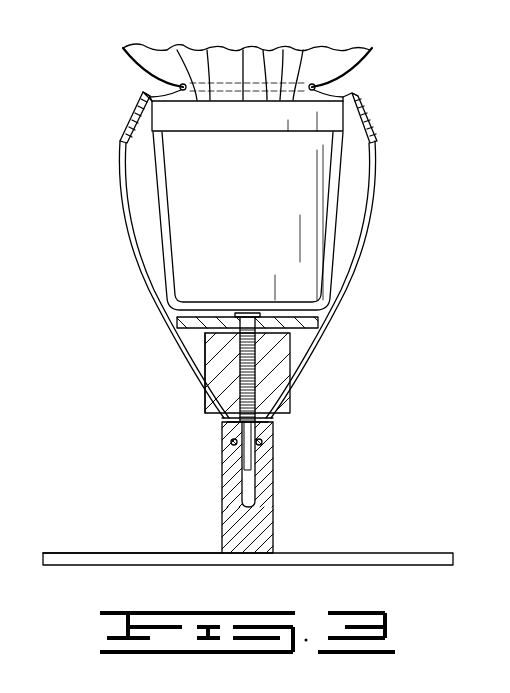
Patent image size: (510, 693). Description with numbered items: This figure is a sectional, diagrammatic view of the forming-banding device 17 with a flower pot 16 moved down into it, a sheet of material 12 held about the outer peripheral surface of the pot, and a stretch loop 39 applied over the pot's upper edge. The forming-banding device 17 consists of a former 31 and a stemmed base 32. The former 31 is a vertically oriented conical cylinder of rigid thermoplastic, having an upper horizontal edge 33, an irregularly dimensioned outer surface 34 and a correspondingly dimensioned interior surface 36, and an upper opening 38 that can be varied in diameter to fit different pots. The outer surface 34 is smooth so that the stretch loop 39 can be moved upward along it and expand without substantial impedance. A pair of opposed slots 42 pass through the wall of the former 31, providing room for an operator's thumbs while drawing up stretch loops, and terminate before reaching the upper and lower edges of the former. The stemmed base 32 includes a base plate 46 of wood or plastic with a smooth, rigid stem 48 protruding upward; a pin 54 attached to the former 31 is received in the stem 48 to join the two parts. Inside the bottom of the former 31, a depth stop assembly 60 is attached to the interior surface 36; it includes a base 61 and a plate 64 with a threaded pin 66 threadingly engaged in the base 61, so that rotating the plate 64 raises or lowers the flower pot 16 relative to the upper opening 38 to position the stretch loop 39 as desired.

The sheet of material 12 is at (273, 48).
The flower pot 16 is at (330, 203).
The forming-banding device 17 is at (370, 112).
The former 31 is at (132, 112).
The stemmed base 32 is at (382, 553).
The upper horizontal edge 33 is at (352, 93).
The outer surface 34 is at (372, 128).
The interior surface 36 is at (137, 140).
The upper opening 38 is at (147, 92).
The stretch loop 39 is at (133, 58).
The slots 42 is at (132, 232).
The base plate 46 is at (92, 552).
The stem 48 is at (222, 473).
The pin 54 is at (250, 477).
The depth stop assembly 60 is at (196, 352).
The base 61 is at (203, 370).
The plate 64 is at (182, 323).
The threaded pin 66 is at (252, 370).